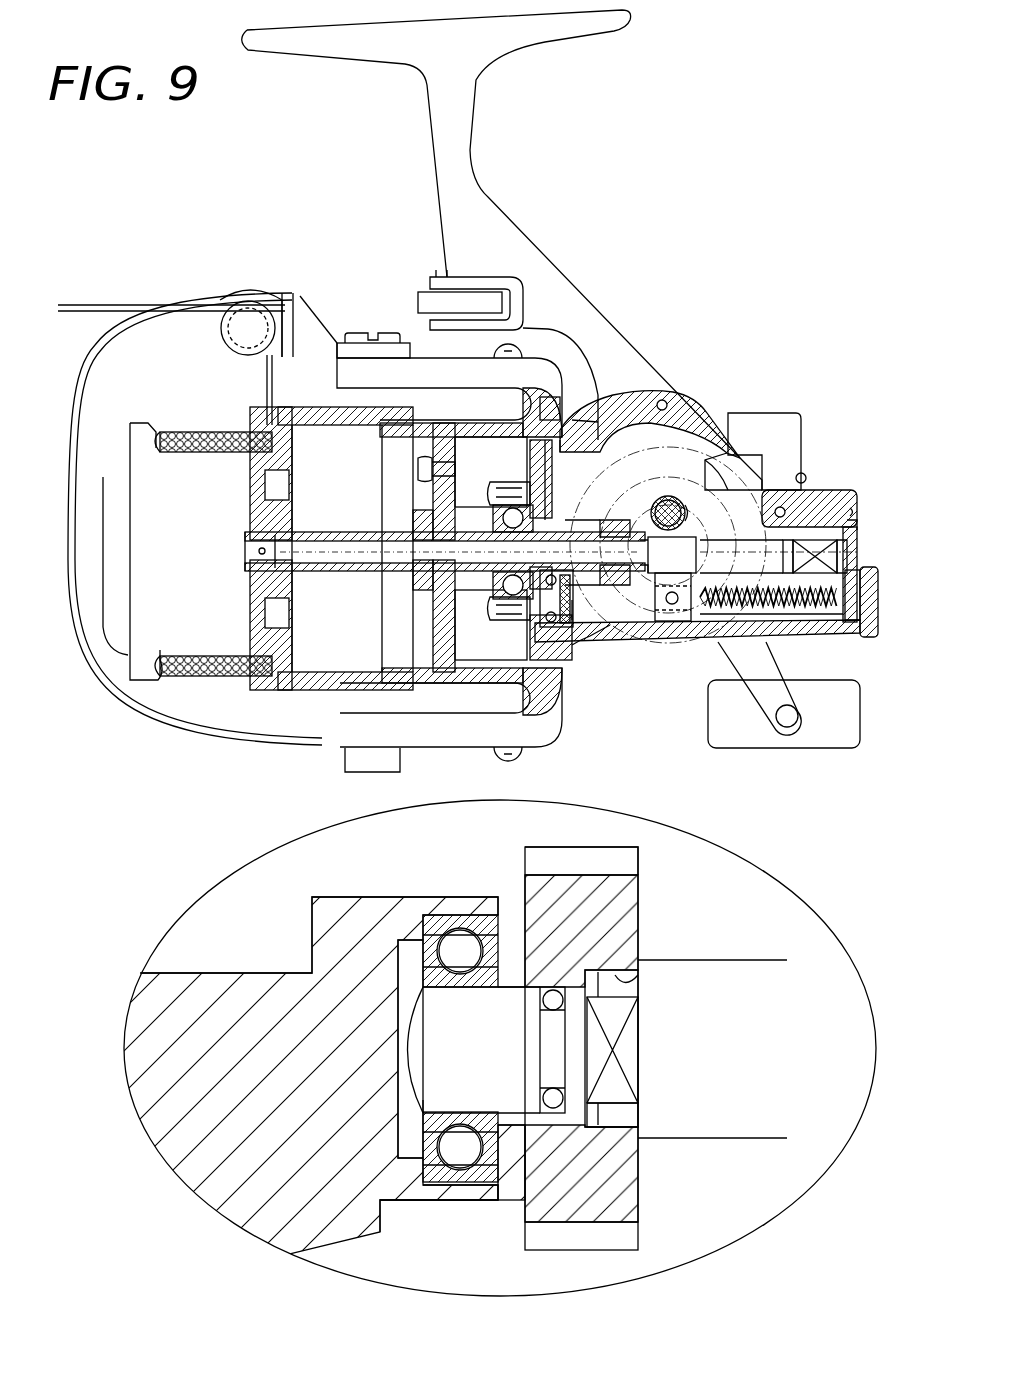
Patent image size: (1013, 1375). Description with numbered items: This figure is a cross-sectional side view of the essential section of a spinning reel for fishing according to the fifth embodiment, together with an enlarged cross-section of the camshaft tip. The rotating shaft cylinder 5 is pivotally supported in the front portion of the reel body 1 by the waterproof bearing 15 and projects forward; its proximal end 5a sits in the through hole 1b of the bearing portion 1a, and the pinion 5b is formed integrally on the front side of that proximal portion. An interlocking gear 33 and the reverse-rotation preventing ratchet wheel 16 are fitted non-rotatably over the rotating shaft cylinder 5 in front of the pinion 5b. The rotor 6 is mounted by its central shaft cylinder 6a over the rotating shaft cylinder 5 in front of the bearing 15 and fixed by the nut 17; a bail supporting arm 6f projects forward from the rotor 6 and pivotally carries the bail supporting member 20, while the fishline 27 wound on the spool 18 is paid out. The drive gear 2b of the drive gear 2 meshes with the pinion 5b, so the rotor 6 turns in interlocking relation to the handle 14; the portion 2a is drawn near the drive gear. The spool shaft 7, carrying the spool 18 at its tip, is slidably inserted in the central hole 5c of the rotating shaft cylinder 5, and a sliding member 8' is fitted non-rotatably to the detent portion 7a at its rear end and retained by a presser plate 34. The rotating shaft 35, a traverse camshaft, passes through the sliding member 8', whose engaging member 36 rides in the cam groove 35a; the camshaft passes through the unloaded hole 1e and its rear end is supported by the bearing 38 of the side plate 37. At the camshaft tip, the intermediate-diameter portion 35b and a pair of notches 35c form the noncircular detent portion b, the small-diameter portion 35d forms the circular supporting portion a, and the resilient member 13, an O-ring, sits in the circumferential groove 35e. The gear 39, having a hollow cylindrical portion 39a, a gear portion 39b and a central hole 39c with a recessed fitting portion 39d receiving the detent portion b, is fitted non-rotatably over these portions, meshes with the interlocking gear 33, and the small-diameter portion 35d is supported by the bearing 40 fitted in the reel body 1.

The reel body 1 is at (626, 310).
The bearing portion 1a is at (626, 430).
The through hole 1b is at (668, 496).
The unloaded hole 1e is at (612, 625).
The drive gear 2 is at (710, 425).
The drive gear tooth portion 2a is at (688, 508).
The drive gear 2b is at (733, 412).
The rotating shaft cylinder 5 is at (400, 538).
The proximal end 5a is at (650, 432).
The pinion 5b is at (612, 440).
The central hole 5c is at (405, 580).
The rotor 6 is at (535, 400).
The central shaft cylinder 6a is at (478, 600).
The bail supporting arm 6f is at (335, 365).
The spool shaft 7 is at (333, 572).
The detent portion 7a is at (818, 538).
The sliding member 8' is at (652, 617).
The resilient member 13 is at (527, 1030).
The handle 14 is at (790, 722).
The waterproof bearing 15 is at (485, 490).
The reverse-rotation preventing ratchet wheel 16 is at (552, 415).
The nut 17 is at (415, 522).
The spool 18 is at (130, 455).
The bail supporting member 20 is at (284, 293).
The fishline 27 is at (118, 305).
The interlocking gear 33 is at (585, 420).
The presser plate 34 is at (675, 620).
The rotating shaft 35 is at (638, 628).
The cam groove 35a is at (798, 640).
The intermediate-diameter portion 35b is at (620, 1115).
The notches 35c is at (622, 1092).
The small-diameter portion 35d is at (450, 1113).
The circumferential groove 35e is at (560, 1040).
The engaging member 36 is at (668, 624).
The side plate 37 is at (858, 538).
The bearing 38 is at (862, 640).
The gear 39 is at (578, 627).
The hollow cylindrical portion 39a is at (508, 1205).
The gear portion 39b is at (645, 855).
The central hole 39c is at (527, 990).
The fitting portion 39d is at (628, 982).
The bearing 40 is at (445, 920).
The circular supporting portion a is at (457, 1077).
The noncircular detent portion b is at (638, 1010).